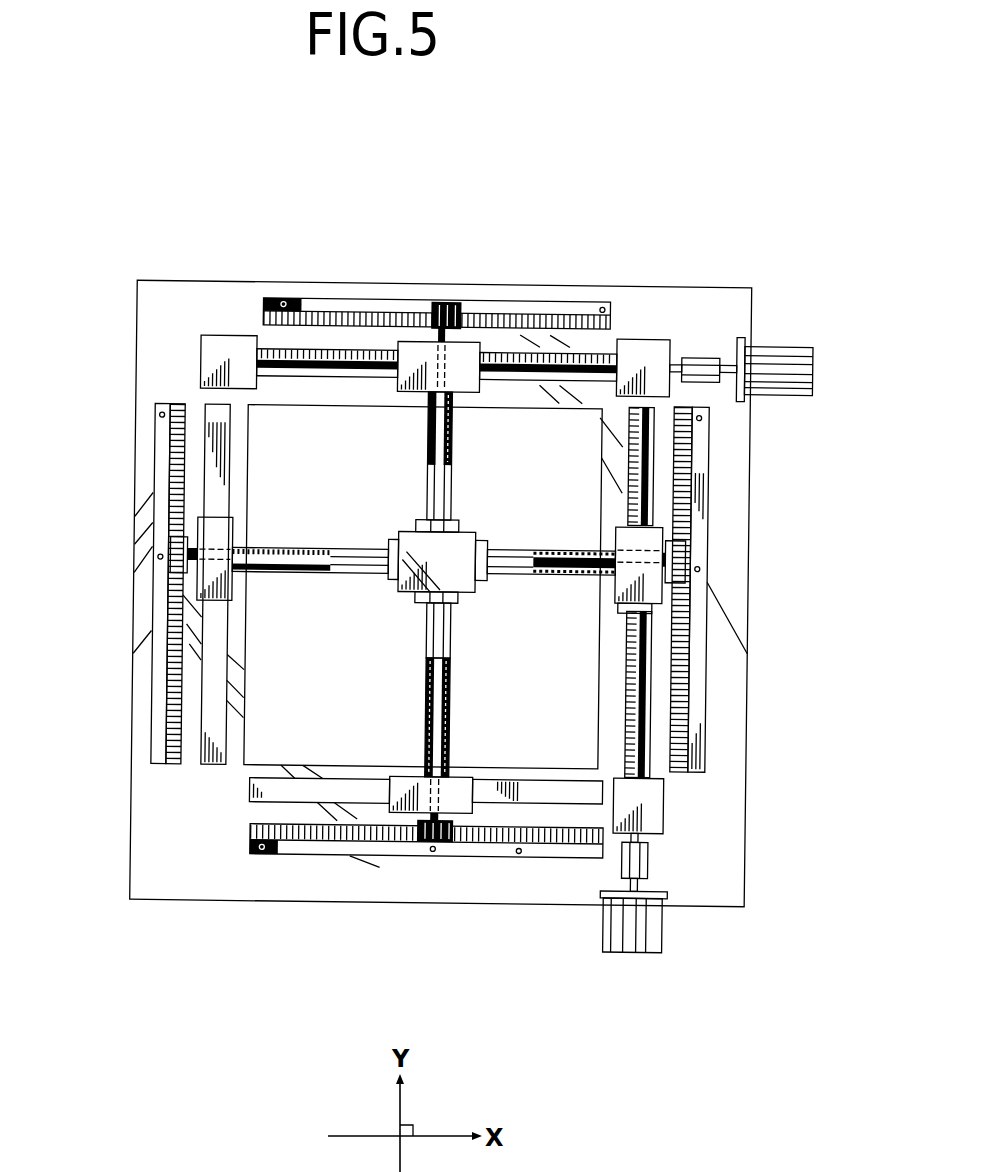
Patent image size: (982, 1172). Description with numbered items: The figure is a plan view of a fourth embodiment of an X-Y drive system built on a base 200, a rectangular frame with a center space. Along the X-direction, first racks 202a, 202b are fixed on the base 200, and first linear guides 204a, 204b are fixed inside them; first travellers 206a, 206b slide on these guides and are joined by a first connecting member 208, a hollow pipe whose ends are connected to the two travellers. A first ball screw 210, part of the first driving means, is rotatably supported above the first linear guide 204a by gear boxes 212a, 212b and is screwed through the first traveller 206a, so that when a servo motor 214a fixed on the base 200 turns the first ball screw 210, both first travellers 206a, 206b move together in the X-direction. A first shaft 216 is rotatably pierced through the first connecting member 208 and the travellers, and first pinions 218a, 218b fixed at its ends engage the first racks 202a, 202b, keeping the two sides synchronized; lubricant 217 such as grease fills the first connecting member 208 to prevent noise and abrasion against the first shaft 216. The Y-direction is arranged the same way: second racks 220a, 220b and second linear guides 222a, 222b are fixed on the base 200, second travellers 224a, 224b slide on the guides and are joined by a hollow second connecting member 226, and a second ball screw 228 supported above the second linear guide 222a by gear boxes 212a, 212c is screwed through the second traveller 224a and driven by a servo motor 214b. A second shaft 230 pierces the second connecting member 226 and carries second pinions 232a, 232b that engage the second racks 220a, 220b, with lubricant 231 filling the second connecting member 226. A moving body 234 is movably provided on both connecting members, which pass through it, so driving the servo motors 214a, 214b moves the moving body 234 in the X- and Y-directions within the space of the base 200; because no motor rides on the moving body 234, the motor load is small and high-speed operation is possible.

The base 200 is at (728, 858).
The first rack 202a is at (372, 307).
The first rack 202b is at (302, 840).
The first linear guide 204a is at (560, 353).
The first linear guide 204b is at (572, 793).
The first traveller 206a is at (467, 355).
The first traveller 206b is at (407, 813).
The first connecting member 208 is at (438, 633).
The first ball screw 210 is at (302, 358).
The gear box 212a is at (650, 353).
The gear box 212b is at (218, 343).
The gear box 212c is at (652, 802).
The servo motor 214a is at (778, 352).
The servo motor 214b is at (658, 954).
The first shaft 216 is at (453, 435).
The lubricant 217 is at (452, 717).
The first pinion 218a is at (447, 300).
The first pinion 218b is at (437, 842).
The second rack 220a is at (687, 658).
The second rack 220b is at (162, 645).
The second linear guide 222a is at (655, 488).
The second linear guide 222b is at (215, 418).
The second traveller 224a is at (687, 593).
The second traveller 224b is at (198, 590).
The second connecting member 226 is at (350, 560).
The second ball screw 228 is at (648, 723).
The second shaft 230 is at (300, 548).
The lubricant 231 is at (282, 572).
The second pinion 232a is at (685, 560).
The second pinion 232b is at (180, 557).
The moving body 234 is at (455, 550).